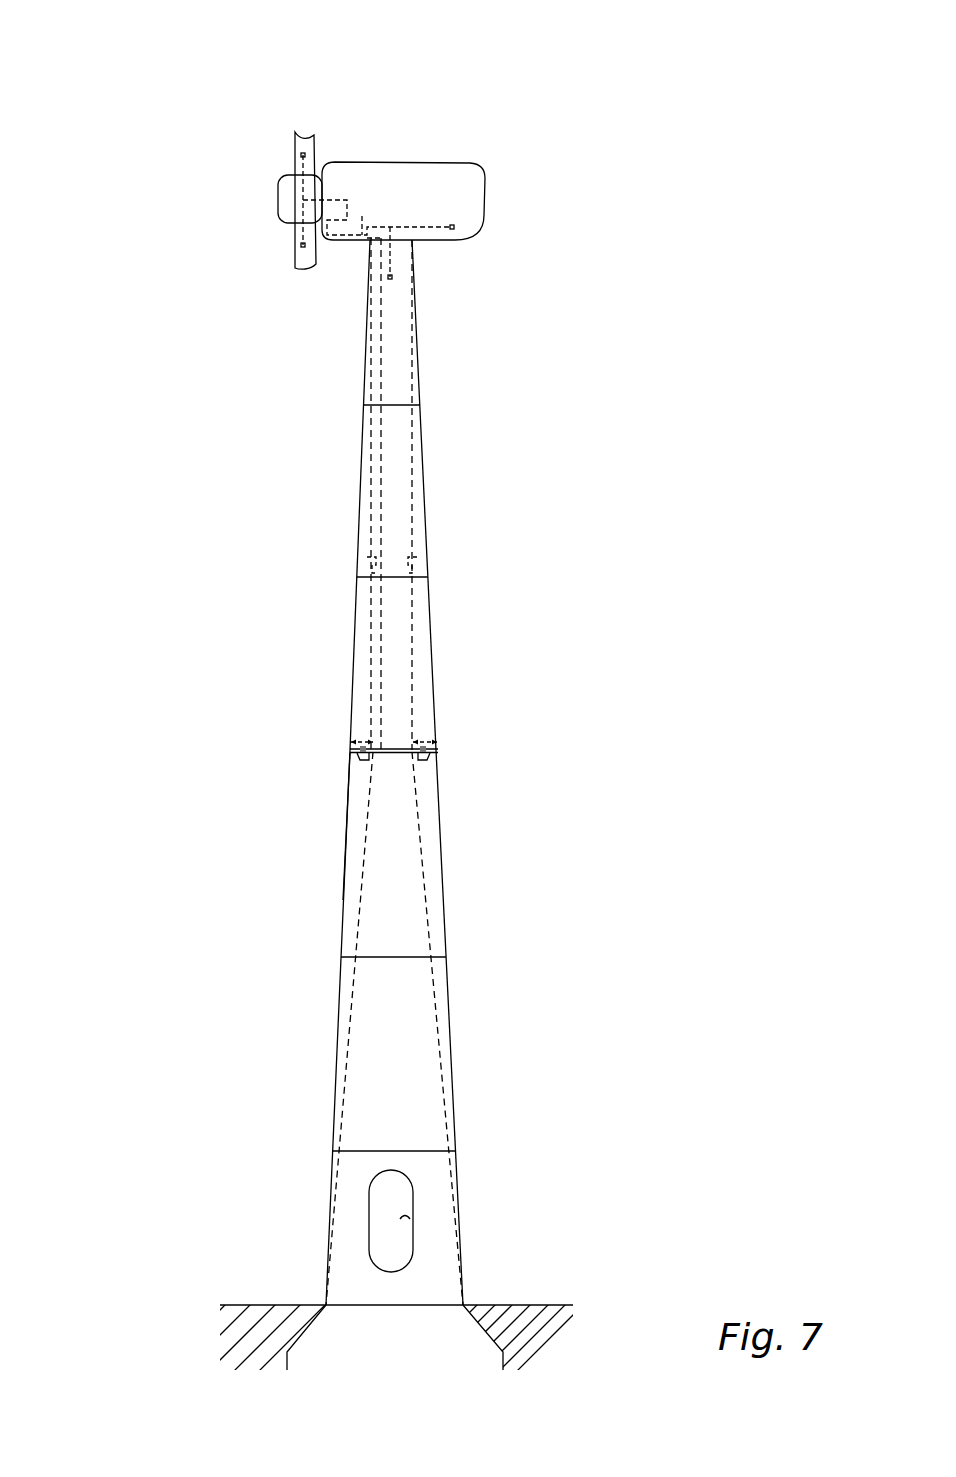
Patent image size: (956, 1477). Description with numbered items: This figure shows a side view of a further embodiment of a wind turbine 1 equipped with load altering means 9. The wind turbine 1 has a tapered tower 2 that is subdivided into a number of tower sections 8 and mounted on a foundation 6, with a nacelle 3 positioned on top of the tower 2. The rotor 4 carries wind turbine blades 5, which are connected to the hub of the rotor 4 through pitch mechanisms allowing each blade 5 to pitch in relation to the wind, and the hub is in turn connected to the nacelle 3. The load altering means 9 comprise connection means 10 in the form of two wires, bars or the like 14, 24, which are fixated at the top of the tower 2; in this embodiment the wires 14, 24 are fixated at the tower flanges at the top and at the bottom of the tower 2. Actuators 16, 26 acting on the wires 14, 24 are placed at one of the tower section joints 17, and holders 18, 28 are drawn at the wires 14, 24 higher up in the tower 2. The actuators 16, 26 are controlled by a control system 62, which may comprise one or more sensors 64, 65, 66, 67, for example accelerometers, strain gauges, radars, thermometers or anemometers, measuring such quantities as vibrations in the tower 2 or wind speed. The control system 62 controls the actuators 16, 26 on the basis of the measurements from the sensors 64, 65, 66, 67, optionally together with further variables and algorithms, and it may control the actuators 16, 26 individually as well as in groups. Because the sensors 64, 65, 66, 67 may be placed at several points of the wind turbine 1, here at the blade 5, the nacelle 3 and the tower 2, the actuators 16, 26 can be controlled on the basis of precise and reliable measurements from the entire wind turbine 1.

The wind turbine 1 is at (300, 1060).
The tower 2 is at (435, 883).
The nacelle 3 is at (430, 237).
The rotor 4 is at (305, 145).
The wind turbine blade 5 is at (293, 200).
The foundation 6 is at (305, 1352).
The tower section 8 is at (397, 460).
The load altering means 9 is at (365, 773).
The connection means 10 is at (365, 853).
The wire 14 is at (371, 672).
The actuator 16 is at (360, 758).
The tower section joint 17 is at (393, 752).
The first cable holder 18 is at (367, 560).
The wire 24 is at (413, 672).
The actuator 26 is at (437, 758).
The second cable holder 28 is at (418, 562).
The control system 62 is at (362, 216).
The sensor 64 is at (303, 155).
The sensor 65 is at (303, 248).
The sensor 66 is at (453, 227).
The sensor 67 is at (390, 277).